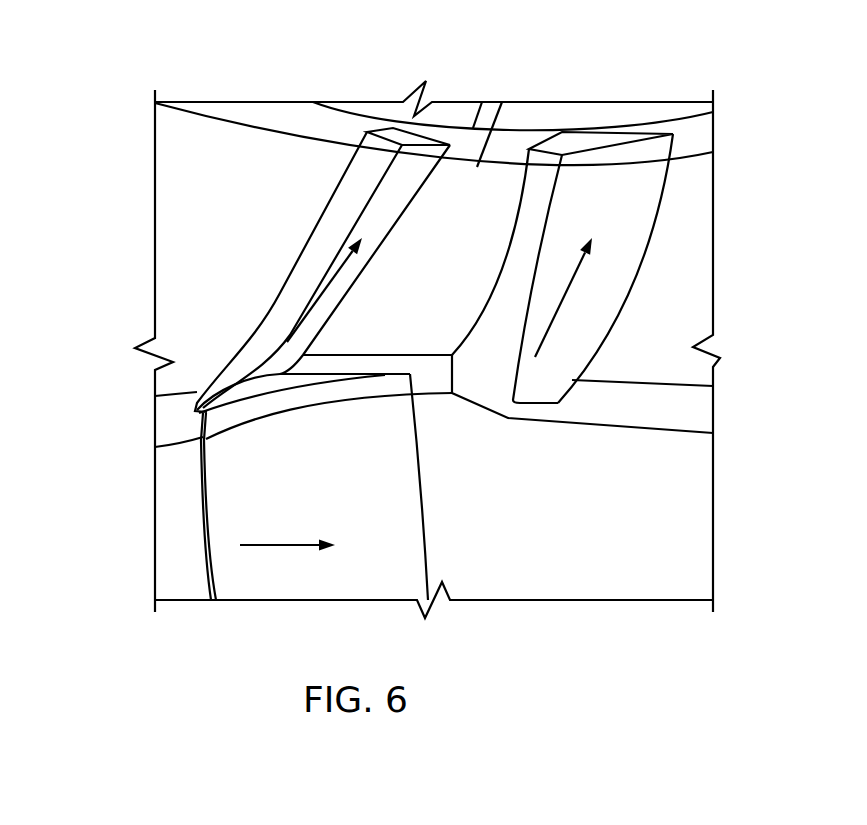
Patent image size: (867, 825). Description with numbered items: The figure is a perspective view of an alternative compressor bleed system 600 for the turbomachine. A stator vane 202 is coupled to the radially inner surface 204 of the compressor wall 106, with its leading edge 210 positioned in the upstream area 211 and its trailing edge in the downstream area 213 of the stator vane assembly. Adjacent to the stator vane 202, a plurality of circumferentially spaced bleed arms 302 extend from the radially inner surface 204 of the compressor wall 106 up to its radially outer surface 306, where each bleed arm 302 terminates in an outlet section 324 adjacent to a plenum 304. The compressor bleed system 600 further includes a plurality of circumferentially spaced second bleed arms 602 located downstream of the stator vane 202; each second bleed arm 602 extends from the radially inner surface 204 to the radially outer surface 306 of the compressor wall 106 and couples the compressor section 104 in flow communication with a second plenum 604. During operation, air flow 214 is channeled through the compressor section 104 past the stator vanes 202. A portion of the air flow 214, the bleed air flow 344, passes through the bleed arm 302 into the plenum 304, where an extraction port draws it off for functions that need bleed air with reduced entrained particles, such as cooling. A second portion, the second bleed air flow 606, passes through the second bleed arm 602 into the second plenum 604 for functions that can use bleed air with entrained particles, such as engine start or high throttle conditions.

The compressor bleed system 600 is at (127, 35).
The compressor wall 106 is at (200, 120).
The radially outer surface 306 is at (302, 135).
The plenum 304 is at (437, 113).
The second plenum 604 is at (632, 112).
The bleed arm 302 is at (325, 203).
The outlet section 324 is at (420, 182).
The bleed air flow 344 is at (343, 268).
The second bleed arm 602 is at (645, 253).
The second bleed air flow 606 is at (565, 298).
The radially inner surface 204 is at (439, 371).
The leading edge 210 is at (202, 477).
The upstream area 211 is at (200, 520).
The downstream area 213 is at (483, 490).
The air flow 214 is at (287, 542).
The stator vane 202 is at (392, 528).
The compressor section 104 is at (182, 570).